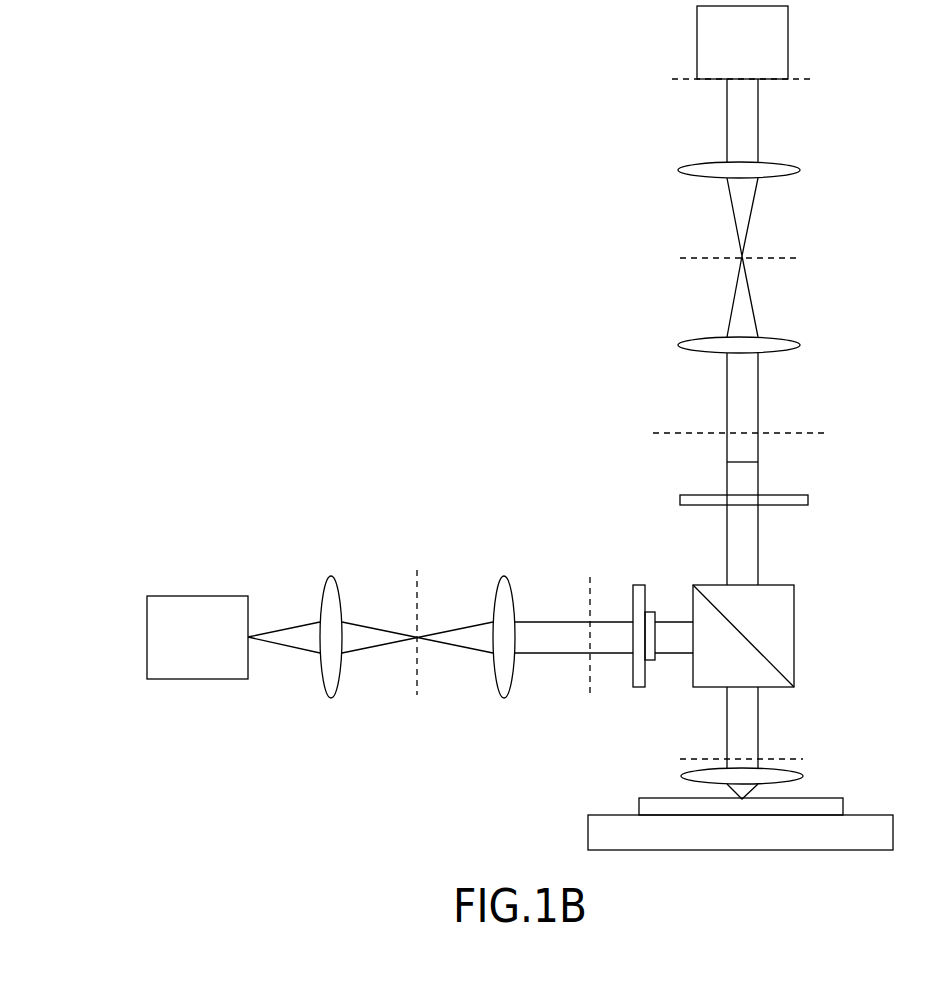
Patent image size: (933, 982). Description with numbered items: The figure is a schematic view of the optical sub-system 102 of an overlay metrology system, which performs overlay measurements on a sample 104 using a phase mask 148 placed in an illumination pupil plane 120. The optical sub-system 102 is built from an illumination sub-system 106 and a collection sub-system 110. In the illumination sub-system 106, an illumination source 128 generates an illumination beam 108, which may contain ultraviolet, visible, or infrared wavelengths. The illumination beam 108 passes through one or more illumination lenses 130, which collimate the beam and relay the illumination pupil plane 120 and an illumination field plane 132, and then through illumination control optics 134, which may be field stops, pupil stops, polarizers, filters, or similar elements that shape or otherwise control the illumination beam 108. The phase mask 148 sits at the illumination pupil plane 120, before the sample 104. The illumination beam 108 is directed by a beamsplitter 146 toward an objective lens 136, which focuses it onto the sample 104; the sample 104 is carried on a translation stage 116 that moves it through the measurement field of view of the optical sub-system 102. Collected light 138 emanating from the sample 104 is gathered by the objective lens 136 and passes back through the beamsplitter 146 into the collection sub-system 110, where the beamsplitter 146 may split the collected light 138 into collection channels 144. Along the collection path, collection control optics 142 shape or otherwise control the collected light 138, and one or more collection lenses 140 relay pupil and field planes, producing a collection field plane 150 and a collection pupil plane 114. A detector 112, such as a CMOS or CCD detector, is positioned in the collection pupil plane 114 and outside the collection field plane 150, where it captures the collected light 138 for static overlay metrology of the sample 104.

The optical sub-system 102 is at (197, 64).
The sample 104 is at (646, 798).
The illumination sub-system 106 is at (295, 459).
The illumination beam 108 is at (305, 622).
The collection sub-system 110 is at (487, 61).
The detector 112 is at (724, 54).
The collection pupil plane 114 is at (688, 78).
The translation stage 116 is at (595, 815).
The illumination pupil plane 120 is at (590, 577).
The illumination source 128 is at (179, 649).
The illumination lens 130 is at (504, 577).
The illumination field plane 132 is at (417, 570).
The illumination control optics 134 is at (638, 585).
The objective lens 136 is at (683, 776).
The collected light 138 is at (727, 388).
The collection lens 140 is at (689, 163).
The collection control optics 142 is at (688, 495).
The collection channel 144 is at (583, 118).
The beamsplitter 146 is at (710, 585).
The phase mask 148 is at (650, 612).
The collection field plane 150 is at (688, 255).